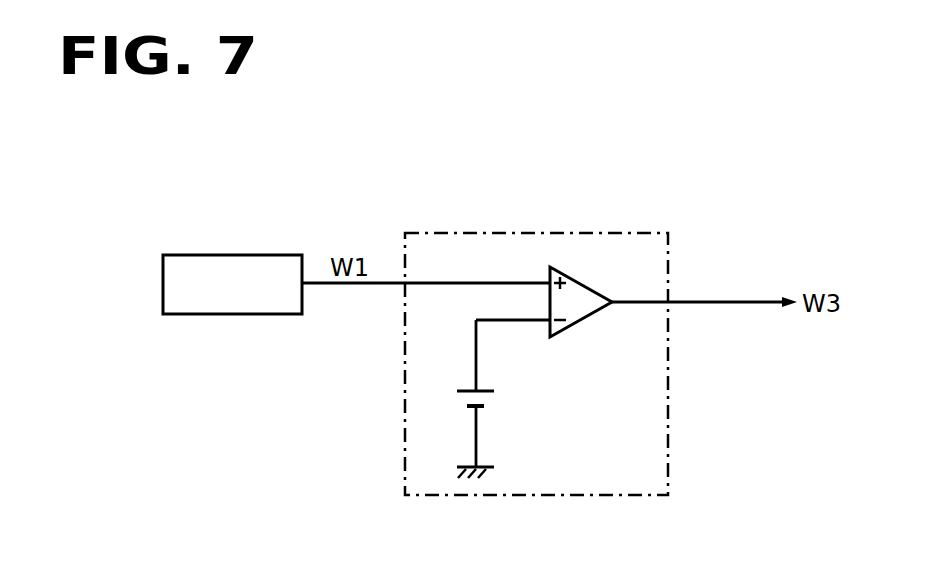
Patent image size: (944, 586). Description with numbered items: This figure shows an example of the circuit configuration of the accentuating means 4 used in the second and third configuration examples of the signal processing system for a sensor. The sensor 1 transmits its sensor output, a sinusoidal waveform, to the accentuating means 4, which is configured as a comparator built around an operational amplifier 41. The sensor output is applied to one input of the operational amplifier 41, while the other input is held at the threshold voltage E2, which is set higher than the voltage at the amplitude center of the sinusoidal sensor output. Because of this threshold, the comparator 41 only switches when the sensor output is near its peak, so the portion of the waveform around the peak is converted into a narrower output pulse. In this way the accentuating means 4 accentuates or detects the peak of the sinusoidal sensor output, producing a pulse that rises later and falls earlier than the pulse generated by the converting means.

The sensor 1 is at (163, 292).
The accentuating means 4 is at (620, 232).
The operational amplifier 41 is at (584, 322).
The voltage E2 is at (482, 399).